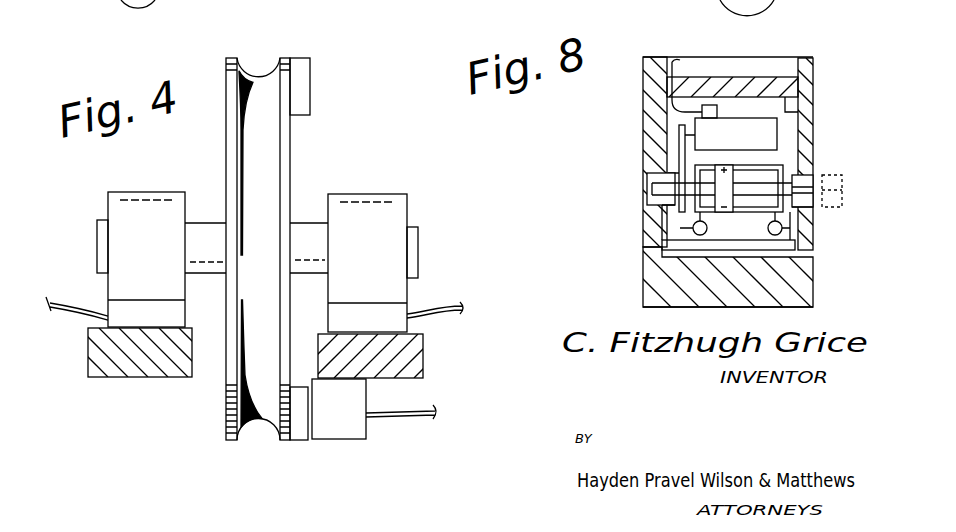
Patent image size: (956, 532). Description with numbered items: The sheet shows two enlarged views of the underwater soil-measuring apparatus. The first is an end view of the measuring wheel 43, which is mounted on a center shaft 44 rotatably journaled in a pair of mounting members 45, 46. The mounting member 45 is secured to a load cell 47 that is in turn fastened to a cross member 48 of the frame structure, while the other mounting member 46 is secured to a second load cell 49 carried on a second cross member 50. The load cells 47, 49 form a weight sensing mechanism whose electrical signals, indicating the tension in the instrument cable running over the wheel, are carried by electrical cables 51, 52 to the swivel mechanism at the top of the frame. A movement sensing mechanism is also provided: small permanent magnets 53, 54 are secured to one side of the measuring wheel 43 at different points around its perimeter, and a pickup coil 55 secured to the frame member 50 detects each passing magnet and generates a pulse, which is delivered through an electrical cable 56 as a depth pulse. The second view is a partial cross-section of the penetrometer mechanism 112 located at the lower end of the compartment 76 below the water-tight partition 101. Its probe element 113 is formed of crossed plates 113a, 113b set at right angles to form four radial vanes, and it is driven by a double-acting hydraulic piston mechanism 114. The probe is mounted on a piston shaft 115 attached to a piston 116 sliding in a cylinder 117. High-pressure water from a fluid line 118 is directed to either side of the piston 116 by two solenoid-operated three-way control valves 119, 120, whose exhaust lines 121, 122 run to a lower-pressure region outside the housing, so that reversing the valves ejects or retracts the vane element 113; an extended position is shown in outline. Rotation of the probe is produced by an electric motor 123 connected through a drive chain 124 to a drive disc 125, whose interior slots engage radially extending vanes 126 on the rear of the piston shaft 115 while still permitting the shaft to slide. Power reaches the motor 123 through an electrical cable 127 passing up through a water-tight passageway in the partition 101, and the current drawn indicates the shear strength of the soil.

In FIG. 4, the measuring wheel 43 is at (228, 135).
In FIG. 4, the center shaft 44 is at (308, 223).
In FIG. 4, the mounting member 45 is at (148, 200).
In FIG. 4, the mounting member 46 is at (387, 196).
In FIG. 4, the load cell 47 is at (175, 316).
In FIG. 4, the cross member 48 is at (138, 378).
In FIG. 4, the second load cell 49 is at (410, 328).
In FIG. 4, the second cross member 50 is at (412, 358).
In FIG. 4, the electrical cable 51 is at (52, 305).
In FIG. 4, the electrical cable 52 is at (457, 306).
In FIG. 4, the permanent magnet 53 is at (312, 86).
In FIG. 4, the permanent magnet 54 is at (300, 442).
In FIG. 4, the pickup coil 55 is at (345, 441).
In FIG. 4, the electrical cable 56 is at (405, 420).
In FIG. 8, the compartment 76 is at (643, 88).
In FIG. 8, the water-tight partition 101 is at (745, 77).
In FIG. 8, the penetrometer mechanism 112 is at (760, 105).
In FIG. 8, the probe element 113 is at (818, 212).
In FIG. 8, the crossed plate 113a is at (843, 181).
In FIG. 8, the crossed plate 113b is at (815, 199).
In FIG. 8, the double-acting hydraulic piston mechanism 114 is at (780, 183).
In FIG. 8, the piston shaft 115 is at (660, 207).
In FIG. 8, the piston 116 is at (782, 158).
In FIG. 8, the cylinder 117 is at (745, 165).
In FIG. 8, the fluid line 118 is at (650, 255).
In FIG. 8, the solenoid-operated three-way control valve 119 is at (708, 229).
In FIG. 8, the solenoid-operated three-way control valve 120 is at (796, 245).
In FIG. 8, the exhaust line 121 is at (662, 240).
In FIG. 8, the exhaust line 122 is at (760, 263).
In FIG. 8, the electric motor 123 is at (780, 120).
In FIG. 8, the drive chain 124 is at (680, 150).
In FIG. 8, the drive disc 125 is at (668, 173).
In FIG. 8, the radially extending vanes 126 is at (652, 193).
In FIG. 8, the electrical cable 127 is at (672, 113).